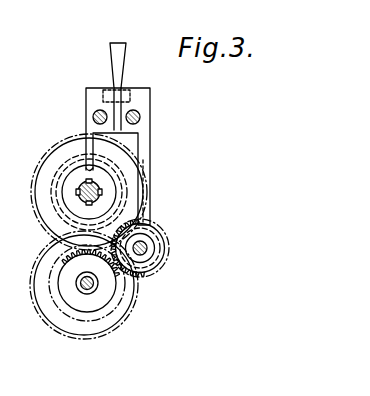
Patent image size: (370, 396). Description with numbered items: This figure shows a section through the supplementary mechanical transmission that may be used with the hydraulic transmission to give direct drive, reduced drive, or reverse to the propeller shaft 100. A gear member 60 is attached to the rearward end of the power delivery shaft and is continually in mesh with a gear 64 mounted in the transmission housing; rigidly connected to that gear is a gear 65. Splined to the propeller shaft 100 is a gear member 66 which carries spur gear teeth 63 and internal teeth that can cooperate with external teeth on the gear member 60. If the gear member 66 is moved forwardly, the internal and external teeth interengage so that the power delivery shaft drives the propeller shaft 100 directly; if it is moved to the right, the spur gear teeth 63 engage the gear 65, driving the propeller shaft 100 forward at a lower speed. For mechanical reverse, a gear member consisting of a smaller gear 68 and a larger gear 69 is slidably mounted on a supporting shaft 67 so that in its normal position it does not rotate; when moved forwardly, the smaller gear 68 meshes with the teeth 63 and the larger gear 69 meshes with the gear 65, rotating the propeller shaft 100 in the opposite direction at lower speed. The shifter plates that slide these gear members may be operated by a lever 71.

The gear member 60 is at (57, 198).
The spur gear teeth 63 is at (122, 135).
The gear 64 is at (88, 331).
The gear 65 is at (108, 305).
The gear member 66 is at (54, 141).
The supporting shaft 67 is at (148, 243).
The smaller gear 68 is at (168, 254).
The larger gear 69 is at (160, 277).
The lever 71 is at (117, 60).
The propeller shaft 100 is at (99, 188).